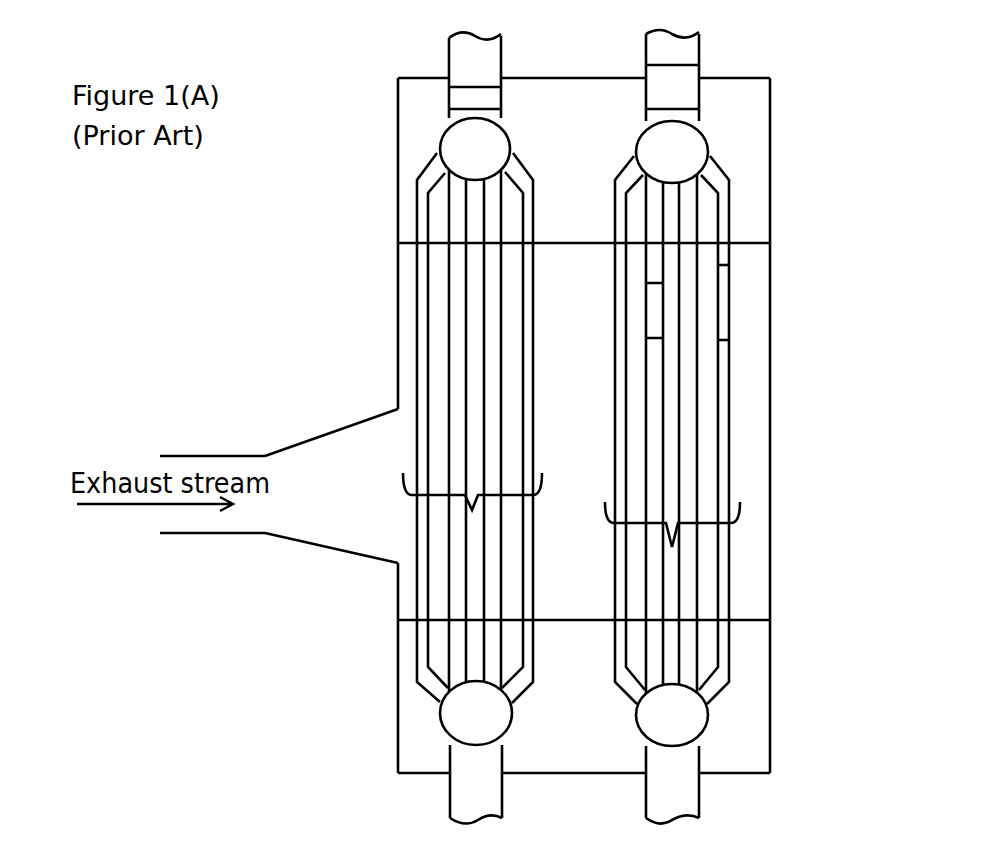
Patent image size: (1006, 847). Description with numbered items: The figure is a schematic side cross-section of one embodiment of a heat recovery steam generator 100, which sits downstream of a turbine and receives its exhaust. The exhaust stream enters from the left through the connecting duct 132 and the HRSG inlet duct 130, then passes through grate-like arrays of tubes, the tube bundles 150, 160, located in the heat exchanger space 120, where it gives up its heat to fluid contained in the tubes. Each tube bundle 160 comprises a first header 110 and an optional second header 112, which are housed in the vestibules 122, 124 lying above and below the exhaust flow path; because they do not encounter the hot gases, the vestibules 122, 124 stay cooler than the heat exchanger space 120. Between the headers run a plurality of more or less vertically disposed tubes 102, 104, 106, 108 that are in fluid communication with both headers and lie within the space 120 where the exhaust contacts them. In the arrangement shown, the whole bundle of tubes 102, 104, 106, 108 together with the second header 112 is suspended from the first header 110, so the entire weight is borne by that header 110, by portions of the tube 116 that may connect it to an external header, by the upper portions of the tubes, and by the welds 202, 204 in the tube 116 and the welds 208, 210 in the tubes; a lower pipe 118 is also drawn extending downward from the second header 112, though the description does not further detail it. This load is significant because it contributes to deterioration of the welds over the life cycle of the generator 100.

The heat recovery steam generator 100 is at (917, 144).
The tube 102 is at (722, 348).
The tube 104 is at (690, 440).
The tube 106 is at (655, 490).
The tube 108 is at (620, 353).
The first header 110 is at (690, 132).
The second header 112 is at (700, 722).
The tube 116 is at (700, 49).
The outlet pipe 118 is at (690, 800).
The heat exchanger space 120 is at (757, 393).
The vestibule 122 is at (760, 190).
The vestibule 124 is at (766, 650).
The HRSG inlet duct 130 is at (298, 442).
The connecting duct 132 is at (212, 452).
The tube bundle 150 is at (470, 518).
The tube bundle 160 is at (675, 547).
The weld 202 is at (492, 95).
The weld 204 is at (687, 70).
The weld 208 is at (720, 287).
The weld 210 is at (650, 303).